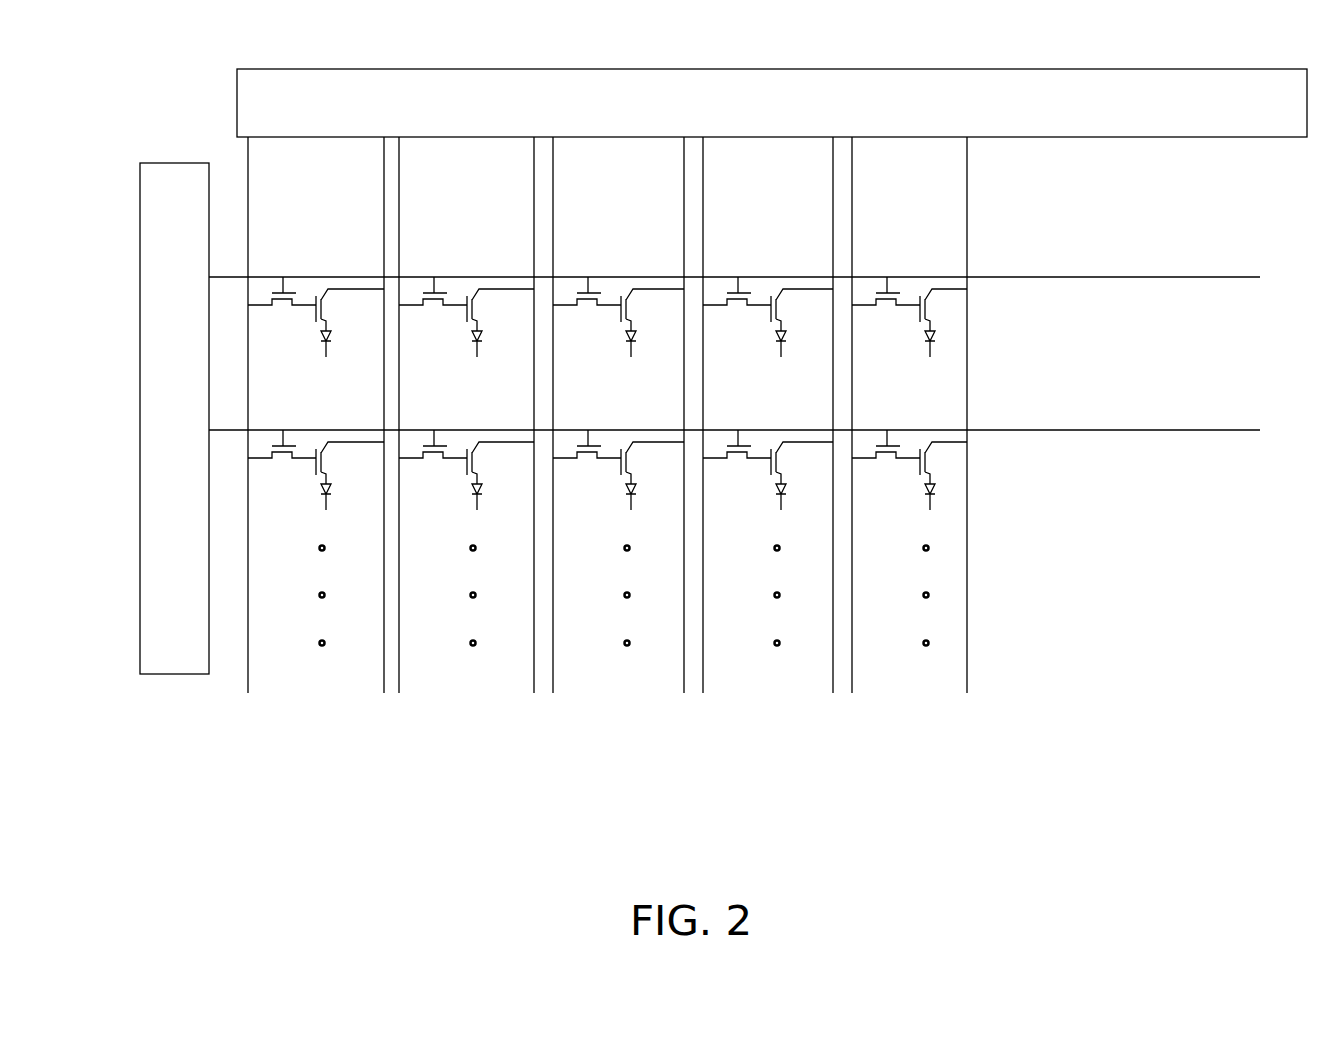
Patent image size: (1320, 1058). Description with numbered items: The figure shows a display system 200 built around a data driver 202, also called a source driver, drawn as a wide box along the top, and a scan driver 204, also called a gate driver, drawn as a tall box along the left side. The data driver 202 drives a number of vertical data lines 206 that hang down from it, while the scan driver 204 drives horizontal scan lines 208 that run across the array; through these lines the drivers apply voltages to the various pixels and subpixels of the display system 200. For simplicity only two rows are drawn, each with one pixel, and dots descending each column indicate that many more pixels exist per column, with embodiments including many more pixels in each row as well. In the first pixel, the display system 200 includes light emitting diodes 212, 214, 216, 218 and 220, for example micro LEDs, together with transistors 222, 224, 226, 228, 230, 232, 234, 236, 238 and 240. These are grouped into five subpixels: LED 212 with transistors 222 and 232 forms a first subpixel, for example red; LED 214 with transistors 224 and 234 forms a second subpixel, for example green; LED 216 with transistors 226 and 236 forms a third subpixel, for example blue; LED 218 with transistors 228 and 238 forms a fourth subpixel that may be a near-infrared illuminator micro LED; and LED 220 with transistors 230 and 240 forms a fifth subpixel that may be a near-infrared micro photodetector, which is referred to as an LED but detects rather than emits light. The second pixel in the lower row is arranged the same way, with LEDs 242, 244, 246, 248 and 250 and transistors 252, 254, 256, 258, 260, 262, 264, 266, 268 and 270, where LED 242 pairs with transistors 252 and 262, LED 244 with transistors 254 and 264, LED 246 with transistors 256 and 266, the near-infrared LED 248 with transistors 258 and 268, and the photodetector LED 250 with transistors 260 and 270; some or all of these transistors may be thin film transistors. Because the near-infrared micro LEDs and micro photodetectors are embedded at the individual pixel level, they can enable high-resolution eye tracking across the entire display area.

The display system 200 is at (710, 888).
The data driver 202 is at (885, 69).
The scan driver 204 is at (168, 163).
The data lines 206 is at (249, 162).
The scan lines 208 is at (1120, 277).
The light emitting diode 212 is at (316, 345).
The light emitting diode 214 is at (466, 345).
The light emitting diode 216 is at (618, 345).
The light emitting diode 218 is at (768, 345).
The light emitting diode 220 is at (948, 322).
The transistor 222 is at (283, 314).
The transistor 224 is at (434, 314).
The transistor 226 is at (588, 314).
The transistor 228 is at (738, 314).
The transistor 230 is at (886, 319).
The transistor 232 is at (346, 351).
The transistor 234 is at (496, 351).
The transistor 236 is at (648, 351).
The transistor 238 is at (798, 351).
The transistor 240 is at (982, 307).
The light emitting diode 242 is at (316, 486).
The light emitting diode 244 is at (466, 486).
The light emitting diode 246 is at (618, 486).
The light emitting diode 248 is at (768, 486).
The light emitting diode 250 is at (948, 475).
The transistor 252 is at (283, 467).
The transistor 254 is at (434, 467).
The transistor 256 is at (588, 467).
The transistor 258 is at (738, 467).
The transistor 260 is at (886, 472).
The transistor 262 is at (350, 492).
The transistor 264 is at (500, 492).
The transistor 266 is at (652, 492).
The transistor 268 is at (802, 492).
The transistor 270 is at (982, 460).